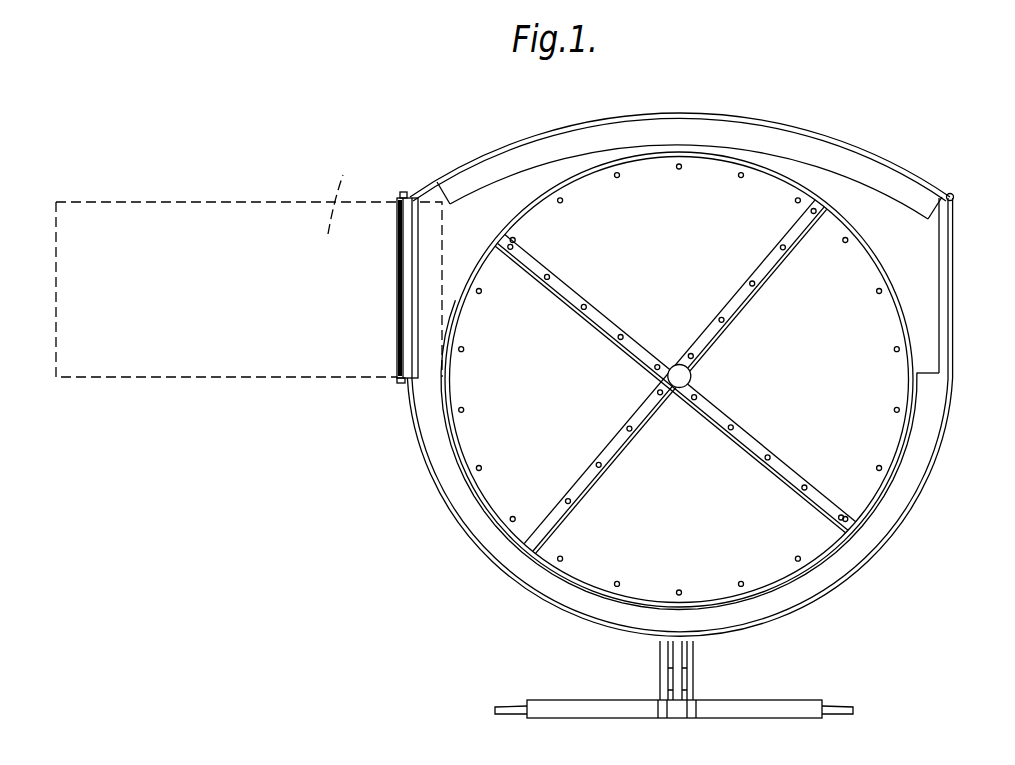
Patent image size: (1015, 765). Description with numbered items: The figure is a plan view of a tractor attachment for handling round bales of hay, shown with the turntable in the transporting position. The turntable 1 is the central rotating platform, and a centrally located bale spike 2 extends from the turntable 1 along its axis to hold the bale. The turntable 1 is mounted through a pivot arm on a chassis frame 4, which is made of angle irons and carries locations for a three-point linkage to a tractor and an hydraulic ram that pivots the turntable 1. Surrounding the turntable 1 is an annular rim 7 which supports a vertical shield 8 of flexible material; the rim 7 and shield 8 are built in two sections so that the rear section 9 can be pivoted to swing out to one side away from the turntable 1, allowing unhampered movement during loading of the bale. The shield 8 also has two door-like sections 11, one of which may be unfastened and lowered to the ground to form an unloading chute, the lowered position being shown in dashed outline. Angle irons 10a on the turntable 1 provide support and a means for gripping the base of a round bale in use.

The turntable 1 is at (480, 458).
The bale spike 2 is at (691, 377).
The chassis frame 4 is at (690, 668).
The annular rim 7 is at (923, 333).
The vertical shield 8 is at (870, 560).
The rear section 9 is at (840, 150).
The spoke 10a is at (766, 262).
The door-like section 11 is at (403, 235).